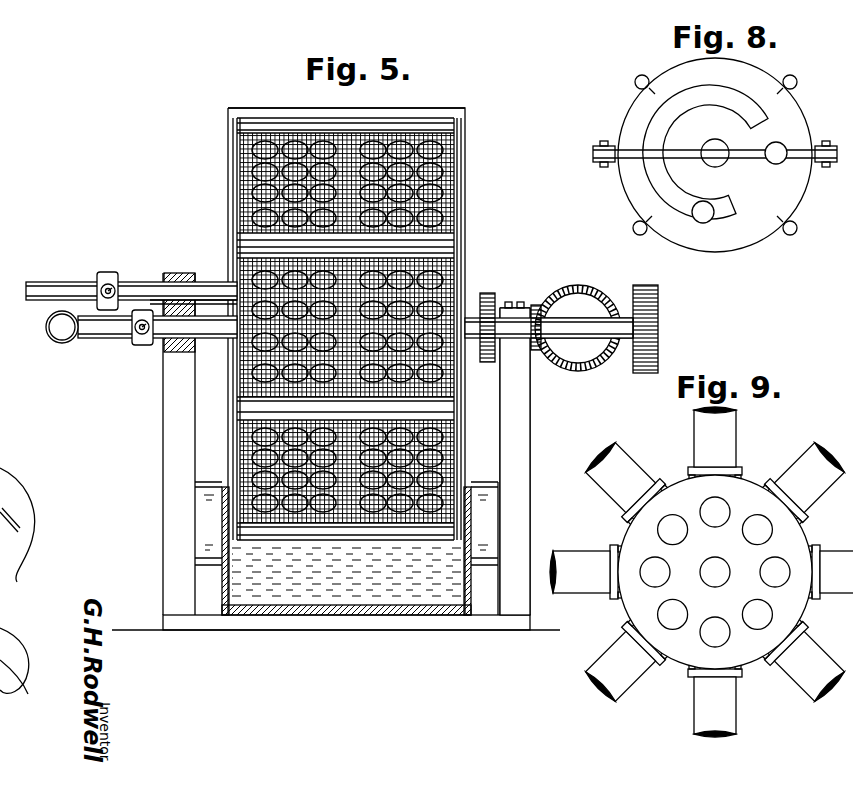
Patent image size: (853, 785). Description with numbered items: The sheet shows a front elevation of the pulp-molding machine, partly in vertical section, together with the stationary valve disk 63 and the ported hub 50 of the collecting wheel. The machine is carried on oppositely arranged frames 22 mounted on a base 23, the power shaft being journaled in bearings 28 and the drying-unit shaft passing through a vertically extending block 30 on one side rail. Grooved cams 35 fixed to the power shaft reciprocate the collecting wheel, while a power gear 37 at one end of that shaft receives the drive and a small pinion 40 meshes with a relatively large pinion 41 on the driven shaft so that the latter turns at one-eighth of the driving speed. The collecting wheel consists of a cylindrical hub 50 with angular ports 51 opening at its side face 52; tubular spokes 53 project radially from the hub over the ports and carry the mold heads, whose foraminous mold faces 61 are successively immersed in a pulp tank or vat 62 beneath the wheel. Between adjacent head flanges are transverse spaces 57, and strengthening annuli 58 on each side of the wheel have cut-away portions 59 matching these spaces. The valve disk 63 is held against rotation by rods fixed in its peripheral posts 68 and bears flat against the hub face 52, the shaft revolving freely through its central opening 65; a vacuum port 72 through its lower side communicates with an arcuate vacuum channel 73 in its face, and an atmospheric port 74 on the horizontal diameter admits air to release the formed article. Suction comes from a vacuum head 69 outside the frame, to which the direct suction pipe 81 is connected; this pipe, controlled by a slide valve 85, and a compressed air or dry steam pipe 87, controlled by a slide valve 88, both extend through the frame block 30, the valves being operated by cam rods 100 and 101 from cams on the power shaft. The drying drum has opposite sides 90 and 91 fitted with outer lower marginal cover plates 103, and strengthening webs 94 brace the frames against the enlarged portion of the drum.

In FIG. 5, the cover plate 103 is at (261, 109).
In FIG. 5, the foraminous mold face 61 is at (457, 165).
In FIG. 5, the drum side 91 is at (228, 186).
In FIG. 5, the drum side 90 is at (465, 193).
In FIG. 5, the strengthening annulus 58 is at (236, 210).
In FIG. 5, the transverse space 57 is at (248, 238).
In FIG. 5, the cut-away portion 59 is at (455, 244).
In FIG. 5, the grooved cam 35 is at (483, 293).
In FIG. 5, the bearing 28 is at (517, 302).
In FIG. 5, the small pinion 40 is at (537, 305).
In FIG. 5, the large pinion 41 is at (580, 286).
In FIG. 5, the power gear 37 is at (655, 330).
In FIG. 5, the compressed air or dry steam pipe 87 is at (46, 282).
In FIG. 5, the slide valve 88 is at (105, 272).
In FIG. 5, the cam rod 101 is at (122, 280).
In FIG. 5, the frame block 30 is at (172, 273).
In FIG. 5, the suction head 69 is at (46, 328).
In FIG. 5, the vacuum pipe 81 is at (106, 338).
In FIG. 5, the slide valve 85 is at (138, 345).
In FIG. 5, the cam rod 100 is at (146, 350).
In FIG. 5, the frame 22 is at (165, 460).
In FIG. 5, the strengthening web 94 is at (206, 511).
In FIG. 5, the pulp tank 62 is at (212, 572).
In FIG. 5, the base 23 is at (170, 616).
In FIG. 8, the peripheral post 68 is at (635, 78).
In FIG. 8, the valve disk 63 is at (626, 113).
In FIG. 8, the arcuate vacuum channel 73 is at (660, 186).
In FIG. 8, the vacuum port 72 is at (700, 222).
In FIG. 8, the central opening 65 is at (718, 162).
In FIG. 8, the atmospheric port 74 is at (783, 162).
In FIG. 9, the cylindrical hub 50 is at (750, 485).
In FIG. 9, the tubular spoke 53 is at (578, 556).
In FIG. 9, the side face 52 is at (715, 561).
In FIG. 9, the angular port 51 is at (716, 622).